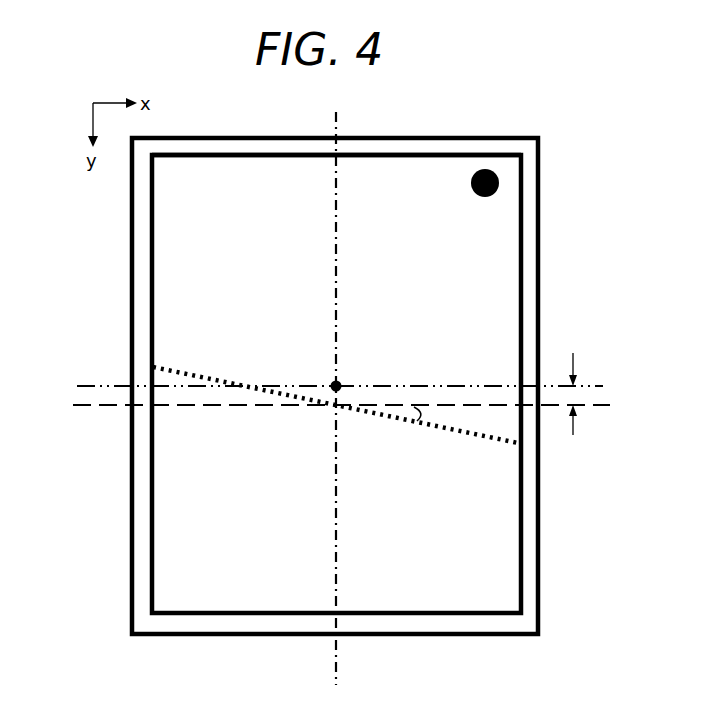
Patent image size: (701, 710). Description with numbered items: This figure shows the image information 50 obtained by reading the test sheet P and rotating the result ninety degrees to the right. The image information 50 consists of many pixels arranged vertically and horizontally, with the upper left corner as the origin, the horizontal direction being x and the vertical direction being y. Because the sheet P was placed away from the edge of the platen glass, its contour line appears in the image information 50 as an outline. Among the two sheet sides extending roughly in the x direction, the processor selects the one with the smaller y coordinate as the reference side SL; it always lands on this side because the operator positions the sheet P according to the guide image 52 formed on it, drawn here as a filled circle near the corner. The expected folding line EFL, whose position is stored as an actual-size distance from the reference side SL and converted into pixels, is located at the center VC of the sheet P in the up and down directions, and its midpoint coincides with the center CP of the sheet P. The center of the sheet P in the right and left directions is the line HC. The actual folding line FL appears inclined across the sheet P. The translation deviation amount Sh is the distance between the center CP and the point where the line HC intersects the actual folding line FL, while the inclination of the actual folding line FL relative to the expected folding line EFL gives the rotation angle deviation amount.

The image information 50 is at (540, 262).
The guide image 52 is at (499, 183).
The sheet P is at (522, 323).
The reference side SL is at (444, 154).
The center of the sheet in the right and left directions HC is at (337, 387).
The center of the sheet in up and down directions VC is at (319, 386).
The expected folding line EFL is at (122, 386).
The center of the sheet CP is at (349, 377).
The actual folding line FL is at (483, 438).
The translation deviation amount Sh is at (586, 395).